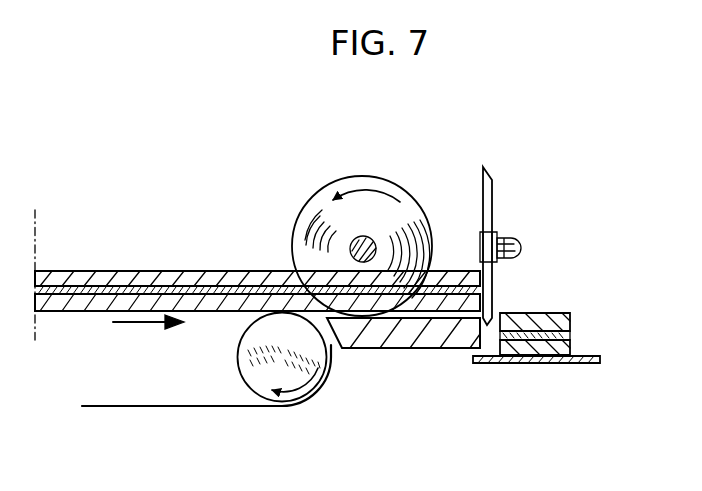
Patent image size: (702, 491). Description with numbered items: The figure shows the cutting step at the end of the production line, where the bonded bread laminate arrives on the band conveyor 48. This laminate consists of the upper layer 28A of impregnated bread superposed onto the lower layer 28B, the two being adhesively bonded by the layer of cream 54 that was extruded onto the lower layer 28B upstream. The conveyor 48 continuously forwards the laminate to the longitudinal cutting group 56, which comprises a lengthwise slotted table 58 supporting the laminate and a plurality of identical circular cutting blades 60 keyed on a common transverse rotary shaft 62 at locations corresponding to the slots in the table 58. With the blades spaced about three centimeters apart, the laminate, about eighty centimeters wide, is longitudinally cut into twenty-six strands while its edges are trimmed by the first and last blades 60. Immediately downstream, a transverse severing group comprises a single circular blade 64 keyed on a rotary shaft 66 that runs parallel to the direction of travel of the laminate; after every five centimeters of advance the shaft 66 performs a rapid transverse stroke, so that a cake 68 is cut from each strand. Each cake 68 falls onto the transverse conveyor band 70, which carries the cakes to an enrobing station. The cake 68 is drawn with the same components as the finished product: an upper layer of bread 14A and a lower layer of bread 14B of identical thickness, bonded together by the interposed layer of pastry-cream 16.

The upper layer 28A is at (70, 276).
The lower layer 28B is at (90, 313).
The layer of cream 54 is at (162, 290).
The pressure roller assembly 56 is at (369, 212).
The lengthwise slotted table 58 is at (407, 332).
The circular cutting blades 60 is at (315, 192).
The transverse rotary shaft 62 is at (372, 243).
The circular blade 64 is at (493, 178).
The rotary shaft 66 is at (500, 236).
The cake 68 is at (580, 324).
The upper layer of bread 14A is at (555, 322).
The layer of pastry-cream 16 is at (570, 345).
The lower layer of bread 14B is at (540, 365).
The conveyor band 70 is at (495, 365).
The band conveyor 48 is at (165, 408).